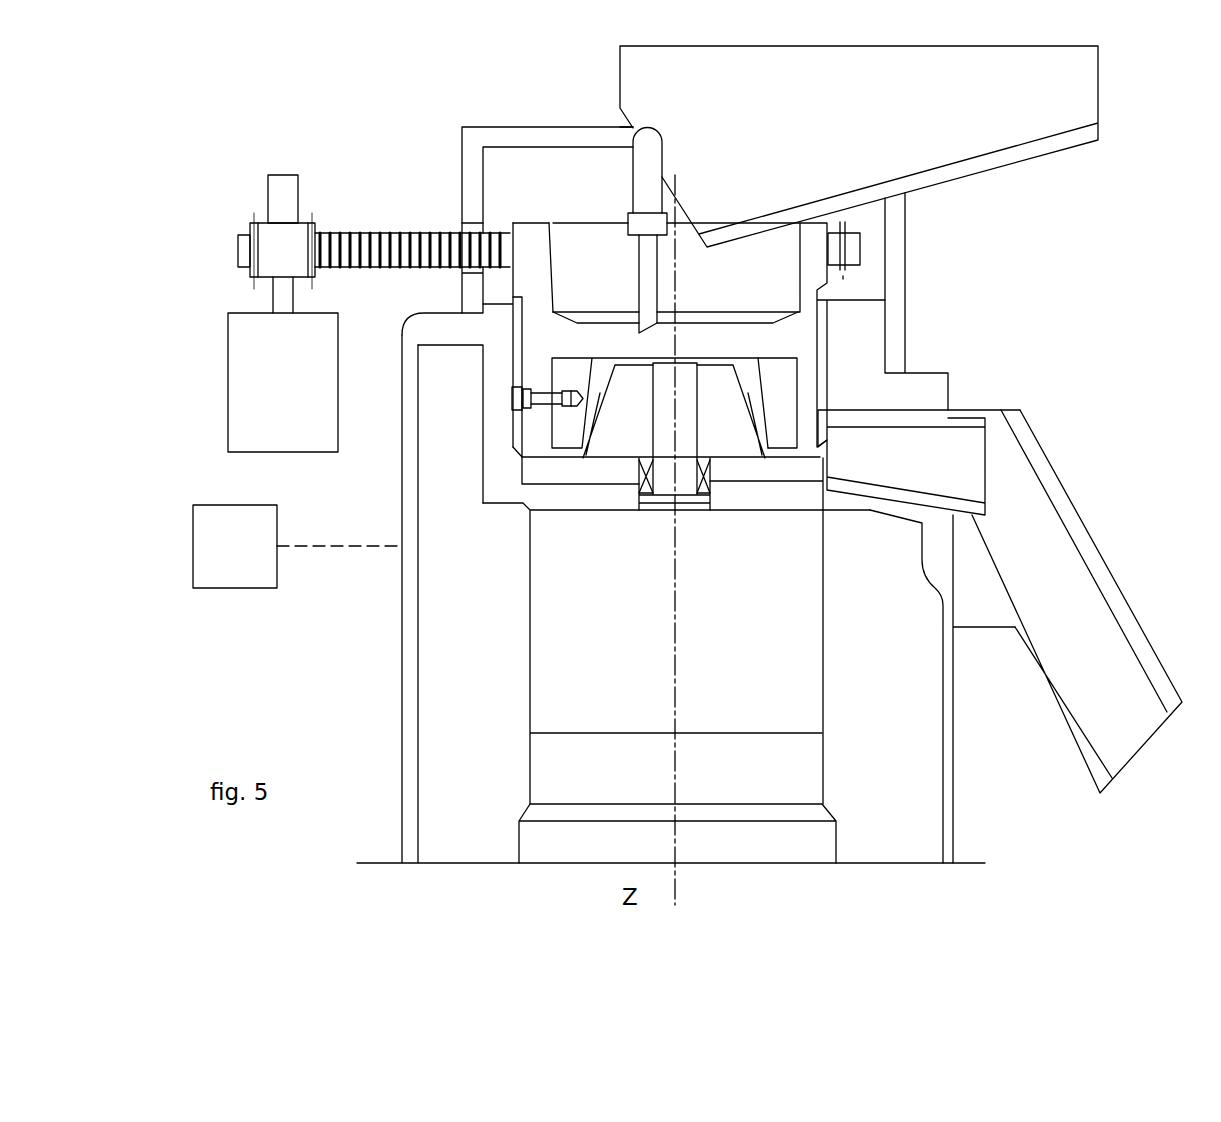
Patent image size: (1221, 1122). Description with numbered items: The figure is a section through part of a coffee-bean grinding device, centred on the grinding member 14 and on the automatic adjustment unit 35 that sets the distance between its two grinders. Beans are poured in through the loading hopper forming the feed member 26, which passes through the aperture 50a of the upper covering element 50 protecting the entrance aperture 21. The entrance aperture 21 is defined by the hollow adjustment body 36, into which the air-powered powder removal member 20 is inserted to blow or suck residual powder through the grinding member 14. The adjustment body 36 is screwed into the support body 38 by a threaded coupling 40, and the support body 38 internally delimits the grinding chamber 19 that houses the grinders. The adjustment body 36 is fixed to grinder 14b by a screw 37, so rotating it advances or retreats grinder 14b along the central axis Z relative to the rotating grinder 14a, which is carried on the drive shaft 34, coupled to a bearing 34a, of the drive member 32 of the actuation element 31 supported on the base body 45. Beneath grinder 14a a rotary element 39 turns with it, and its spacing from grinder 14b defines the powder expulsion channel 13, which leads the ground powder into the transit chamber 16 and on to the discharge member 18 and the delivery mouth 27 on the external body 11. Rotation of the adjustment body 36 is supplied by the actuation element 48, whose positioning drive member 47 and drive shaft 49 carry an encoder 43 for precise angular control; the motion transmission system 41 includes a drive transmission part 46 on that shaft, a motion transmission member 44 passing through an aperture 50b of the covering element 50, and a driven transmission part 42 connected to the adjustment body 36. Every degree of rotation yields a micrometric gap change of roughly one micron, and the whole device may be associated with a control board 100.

The external body 11 is at (413, 624).
The powder expulsion channel 13 is at (770, 458).
The grinding member 14 is at (760, 330).
The grinder 14a is at (719, 442).
The grinder 14b is at (775, 392).
The transit chamber 16 is at (952, 427).
The discharge member 18 is at (1100, 540).
The grinding chamber 19 is at (827, 348).
The air-powered powder removal member 20 is at (619, 194).
The entrance aperture 21 is at (548, 230).
The feed member 26 is at (1008, 172).
The delivery mouth 27 is at (1115, 603).
The actuation element 31 is at (846, 583).
The drive member 32 is at (540, 595).
The drive shaft 34 is at (663, 476).
The bearing 34a is at (643, 476).
The automatic adjustment unit 35 is at (563, 264).
The adjustment body 36 is at (522, 232).
The screw 37 is at (538, 398).
The support body 38 is at (494, 361).
The rotary element 39 is at (535, 470).
The threaded coupling 40 is at (515, 334).
The motion transmission system 41 is at (332, 279).
The driven transmission part 42 is at (853, 245).
The angular position transducer or encoder 43 is at (283, 190).
The motion transmission member 44 is at (356, 231).
The base body 45 is at (540, 766).
The drive transmission part 46 is at (253, 231).
The drive member 47 is at (255, 375).
The actuation element 48 is at (246, 361).
The drive shaft 49 is at (283, 295).
The upper covering element 50 is at (470, 135).
The aperture 50a is at (634, 129).
The aperture 50b is at (468, 225).
The control board 100 is at (227, 563).